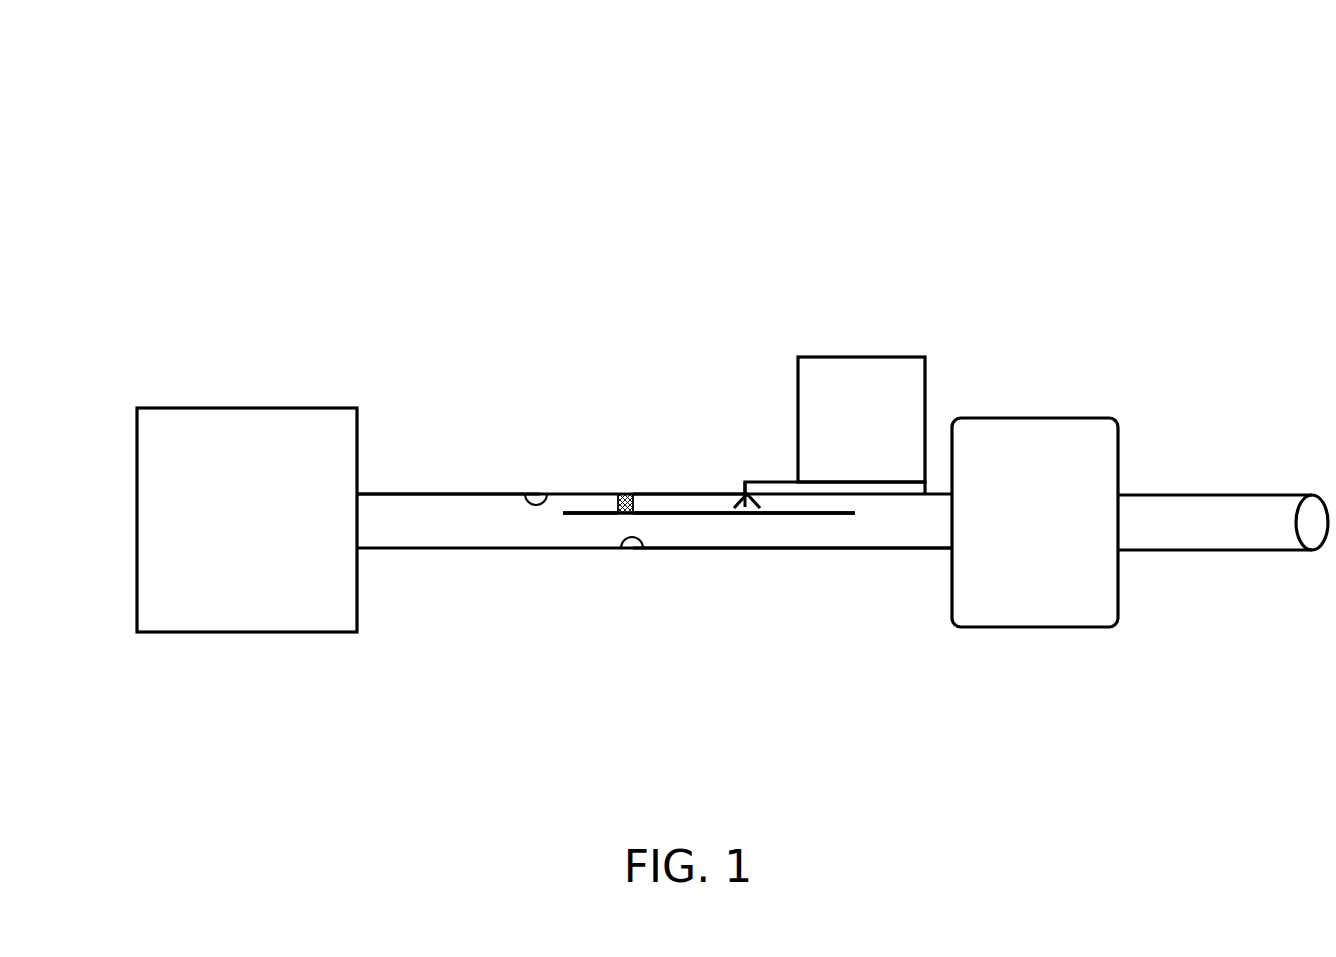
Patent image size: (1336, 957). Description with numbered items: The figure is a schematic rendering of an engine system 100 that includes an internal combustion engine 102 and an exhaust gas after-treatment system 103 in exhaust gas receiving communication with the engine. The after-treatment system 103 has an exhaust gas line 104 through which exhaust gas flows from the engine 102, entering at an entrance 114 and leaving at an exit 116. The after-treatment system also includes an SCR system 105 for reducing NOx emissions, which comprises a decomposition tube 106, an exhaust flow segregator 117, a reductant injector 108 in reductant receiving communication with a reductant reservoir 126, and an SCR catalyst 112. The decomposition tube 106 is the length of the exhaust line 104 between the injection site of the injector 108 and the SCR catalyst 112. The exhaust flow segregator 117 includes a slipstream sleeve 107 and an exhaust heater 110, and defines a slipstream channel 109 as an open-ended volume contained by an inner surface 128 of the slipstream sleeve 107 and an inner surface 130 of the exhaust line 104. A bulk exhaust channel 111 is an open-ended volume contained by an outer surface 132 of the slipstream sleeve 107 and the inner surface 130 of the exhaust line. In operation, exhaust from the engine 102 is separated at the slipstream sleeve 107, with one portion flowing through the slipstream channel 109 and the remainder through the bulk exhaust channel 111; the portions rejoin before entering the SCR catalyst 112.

The engine system 100 is at (436, 153).
The internal combustion engine 102 is at (247, 520).
The exhaust gas after-treatment system 103 is at (726, 316).
The exhaust gas line 104 is at (496, 566).
The SCR system 105 is at (956, 393).
The decomposition tube 106 is at (789, 551).
The slipstream sleeve 107 is at (733, 516).
The reductant injector 108 is at (765, 482).
The slipstream channel 109 is at (675, 505).
The exhaust heater 110 is at (627, 493).
The bulk exhaust channel 111 is at (755, 533).
The SCR catalyst 112 is at (1035, 522).
The entrance 114 is at (358, 494).
The exit 116 is at (1311, 494).
The exhaust flow segregator 117 is at (656, 480).
The reductant reservoir 126 is at (861, 419).
The inner surface of the slipstream sleeve 128 is at (565, 513).
The inner surface of the exhaust line 130 is at (526, 494).
The outer surface of the slipstream sleeve 132 is at (683, 515).